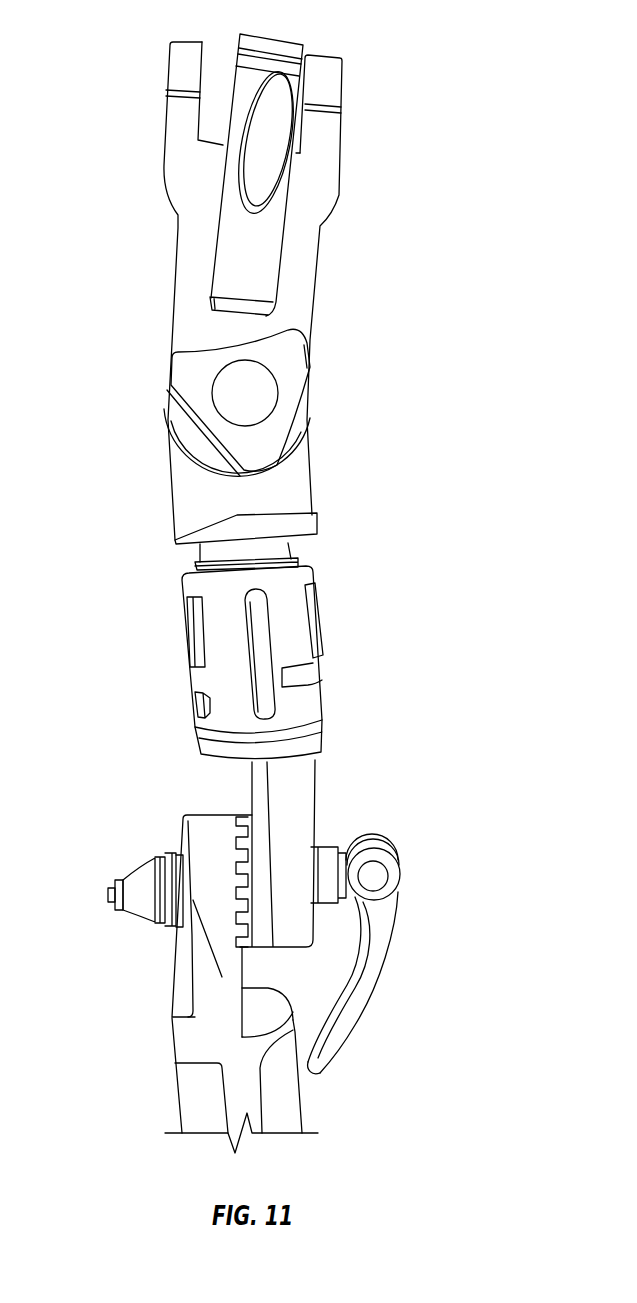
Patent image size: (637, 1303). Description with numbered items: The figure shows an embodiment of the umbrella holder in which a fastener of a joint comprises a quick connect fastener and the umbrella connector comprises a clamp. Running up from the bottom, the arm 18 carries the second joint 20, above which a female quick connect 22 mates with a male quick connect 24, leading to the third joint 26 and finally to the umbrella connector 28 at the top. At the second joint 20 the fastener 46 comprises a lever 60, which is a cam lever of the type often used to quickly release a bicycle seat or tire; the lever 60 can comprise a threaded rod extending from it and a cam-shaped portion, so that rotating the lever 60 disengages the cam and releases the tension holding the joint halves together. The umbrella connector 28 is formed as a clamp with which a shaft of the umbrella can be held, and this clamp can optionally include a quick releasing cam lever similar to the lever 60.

The arm 18 is at (177, 1093).
The second joint 20 is at (150, 821).
The female quick connect 22 is at (317, 617).
The male quick connect 24 is at (281, 544).
The third joint 26 is at (130, 421).
The umbrella connector 28 is at (316, 202).
The fastener 46 is at (302, 353).
The lever 60 is at (400, 877).